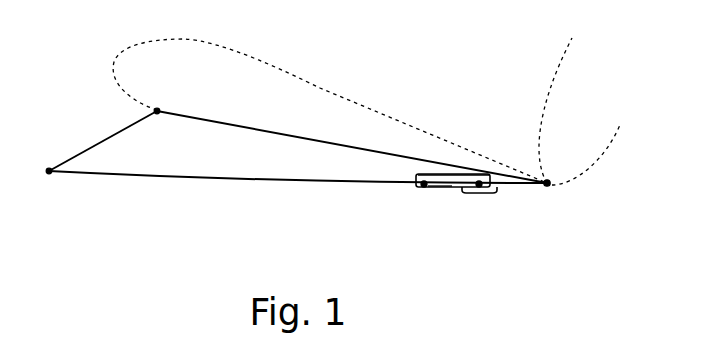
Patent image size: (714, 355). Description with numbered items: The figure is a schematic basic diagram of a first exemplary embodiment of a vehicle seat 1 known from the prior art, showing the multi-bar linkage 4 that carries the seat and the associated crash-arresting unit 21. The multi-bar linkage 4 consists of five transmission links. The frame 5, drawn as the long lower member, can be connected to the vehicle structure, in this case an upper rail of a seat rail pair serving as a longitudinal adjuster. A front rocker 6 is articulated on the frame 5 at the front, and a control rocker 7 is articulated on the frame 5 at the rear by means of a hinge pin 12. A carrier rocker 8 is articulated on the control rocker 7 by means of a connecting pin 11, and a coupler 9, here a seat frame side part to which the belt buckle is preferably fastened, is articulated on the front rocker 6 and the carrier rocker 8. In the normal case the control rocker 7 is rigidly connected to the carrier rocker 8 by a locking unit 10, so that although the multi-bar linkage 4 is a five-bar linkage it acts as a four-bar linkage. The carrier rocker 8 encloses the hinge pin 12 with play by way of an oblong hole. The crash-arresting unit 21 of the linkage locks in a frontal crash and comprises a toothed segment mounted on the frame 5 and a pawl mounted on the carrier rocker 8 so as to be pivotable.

The vehicle seat 1 is at (362, 68).
The multi-bar linkage 4 is at (238, 125).
The frame 5 is at (230, 177).
The front rocker 6 is at (103, 138).
The control rocker 7 is at (458, 188).
The carrier rocker 8 is at (512, 186).
The coupler 9 is at (425, 174).
The locking unit 10 is at (486, 188).
The connecting pin 11 is at (487, 194).
The hinge pin 12 is at (423, 187).
The crash-arresting unit 21 is at (440, 188).